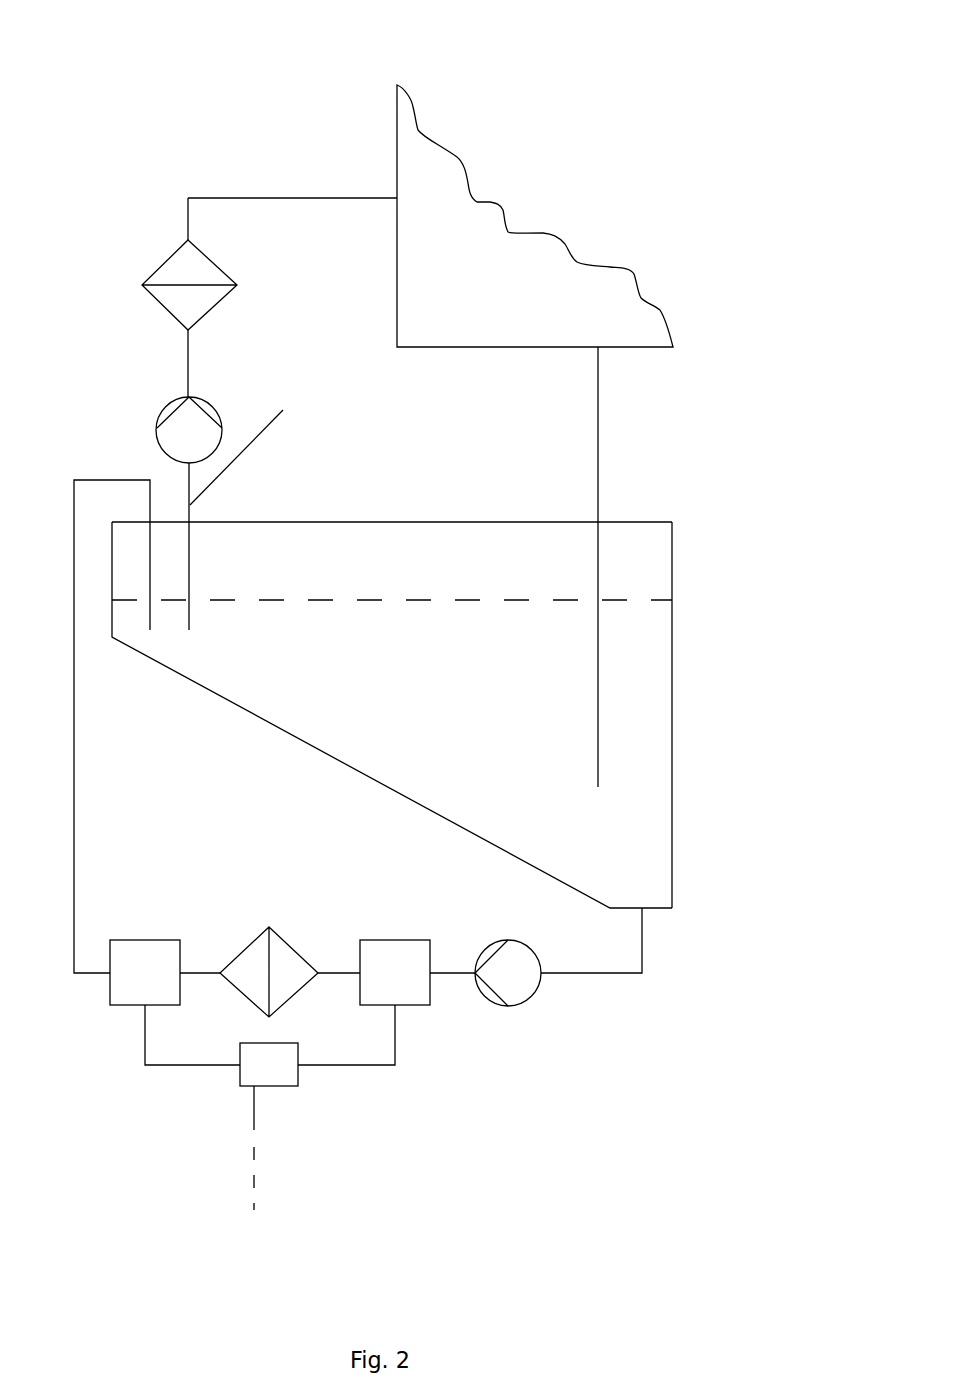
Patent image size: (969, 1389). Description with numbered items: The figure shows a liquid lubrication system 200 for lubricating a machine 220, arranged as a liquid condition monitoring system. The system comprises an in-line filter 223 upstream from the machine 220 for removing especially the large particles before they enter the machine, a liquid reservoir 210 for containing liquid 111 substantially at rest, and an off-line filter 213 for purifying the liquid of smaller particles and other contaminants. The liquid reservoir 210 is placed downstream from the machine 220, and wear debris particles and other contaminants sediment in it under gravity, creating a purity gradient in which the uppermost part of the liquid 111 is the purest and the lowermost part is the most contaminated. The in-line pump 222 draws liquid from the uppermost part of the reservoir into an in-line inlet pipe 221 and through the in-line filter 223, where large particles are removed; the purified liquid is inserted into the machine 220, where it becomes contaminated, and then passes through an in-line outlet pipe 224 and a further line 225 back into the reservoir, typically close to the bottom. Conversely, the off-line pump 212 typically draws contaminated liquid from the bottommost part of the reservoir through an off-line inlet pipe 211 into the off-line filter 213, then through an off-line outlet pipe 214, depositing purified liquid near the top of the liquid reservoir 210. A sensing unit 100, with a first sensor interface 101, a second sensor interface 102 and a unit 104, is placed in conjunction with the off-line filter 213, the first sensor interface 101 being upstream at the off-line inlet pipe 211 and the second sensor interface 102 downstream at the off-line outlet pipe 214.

The liquid lubrication system 200 is at (263, 98).
The liquid reservoir 210 is at (640, 540).
The liquid 111 is at (640, 750).
The machine 220 is at (508, 247).
The in-line inlet pipe 221 is at (189, 358).
The in-line pump 222 is at (157, 418).
The in-line filter 223 is at (212, 262).
The in-line outlet pipe 224 is at (338, 198).
The return line 225 is at (598, 403).
The off-line inlet pipe 211 is at (582, 972).
The off-line pump 212 is at (530, 1000).
The off-line filter 213 is at (283, 938).
The off-line outlet pipe 214 is at (74, 918).
The sensing unit 100 is at (270, 1086).
The first sensor interface 101 is at (413, 1005).
The second sensor interface 102 is at (125, 1005).
The evaluation unit 104 is at (254, 1111).